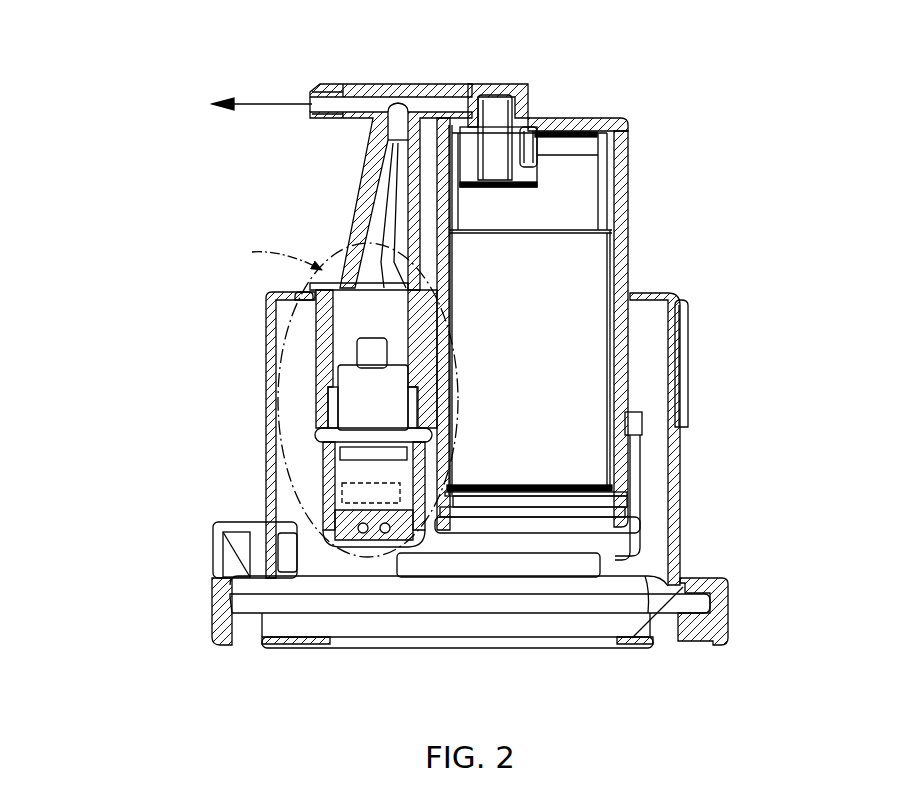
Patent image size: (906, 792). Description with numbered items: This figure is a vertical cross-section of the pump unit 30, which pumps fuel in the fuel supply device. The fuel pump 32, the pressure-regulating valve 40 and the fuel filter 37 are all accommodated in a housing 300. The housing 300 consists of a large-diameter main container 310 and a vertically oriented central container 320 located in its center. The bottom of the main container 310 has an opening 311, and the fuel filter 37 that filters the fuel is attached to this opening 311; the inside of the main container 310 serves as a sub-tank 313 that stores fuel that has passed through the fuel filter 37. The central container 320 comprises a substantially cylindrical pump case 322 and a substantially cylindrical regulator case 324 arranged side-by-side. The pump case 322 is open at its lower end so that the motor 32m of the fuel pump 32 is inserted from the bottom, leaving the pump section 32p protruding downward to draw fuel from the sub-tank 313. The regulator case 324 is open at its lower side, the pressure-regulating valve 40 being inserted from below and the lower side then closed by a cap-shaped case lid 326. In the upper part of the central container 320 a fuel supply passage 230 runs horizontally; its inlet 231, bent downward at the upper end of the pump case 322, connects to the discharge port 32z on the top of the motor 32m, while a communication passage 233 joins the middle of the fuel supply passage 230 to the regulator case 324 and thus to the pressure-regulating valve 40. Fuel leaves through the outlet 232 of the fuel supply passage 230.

The pump unit 30 is at (647, 102).
The fuel supply passage 230 is at (421, 98).
The outlet 232 is at (327, 104).
The communication passage 233 is at (403, 218).
The discharge port 32z is at (487, 145).
The inlet 231 is at (512, 160).
The housing 300 is at (688, 284).
The central container 320 is at (659, 152).
The pump case 322 is at (624, 206).
The main container 310 is at (680, 470).
The sub-tank 313 is at (652, 548).
The regulator case 324 is at (314, 320).
The pressure-regulating valve 40 is at (354, 413).
The case lid 326 is at (324, 480).
The fuel pump 32 is at (586, 388).
The motor 32m is at (580, 333).
The pump section 32p is at (505, 527).
The fuel filter 37 is at (543, 594).
The opening 311 is at (653, 594).